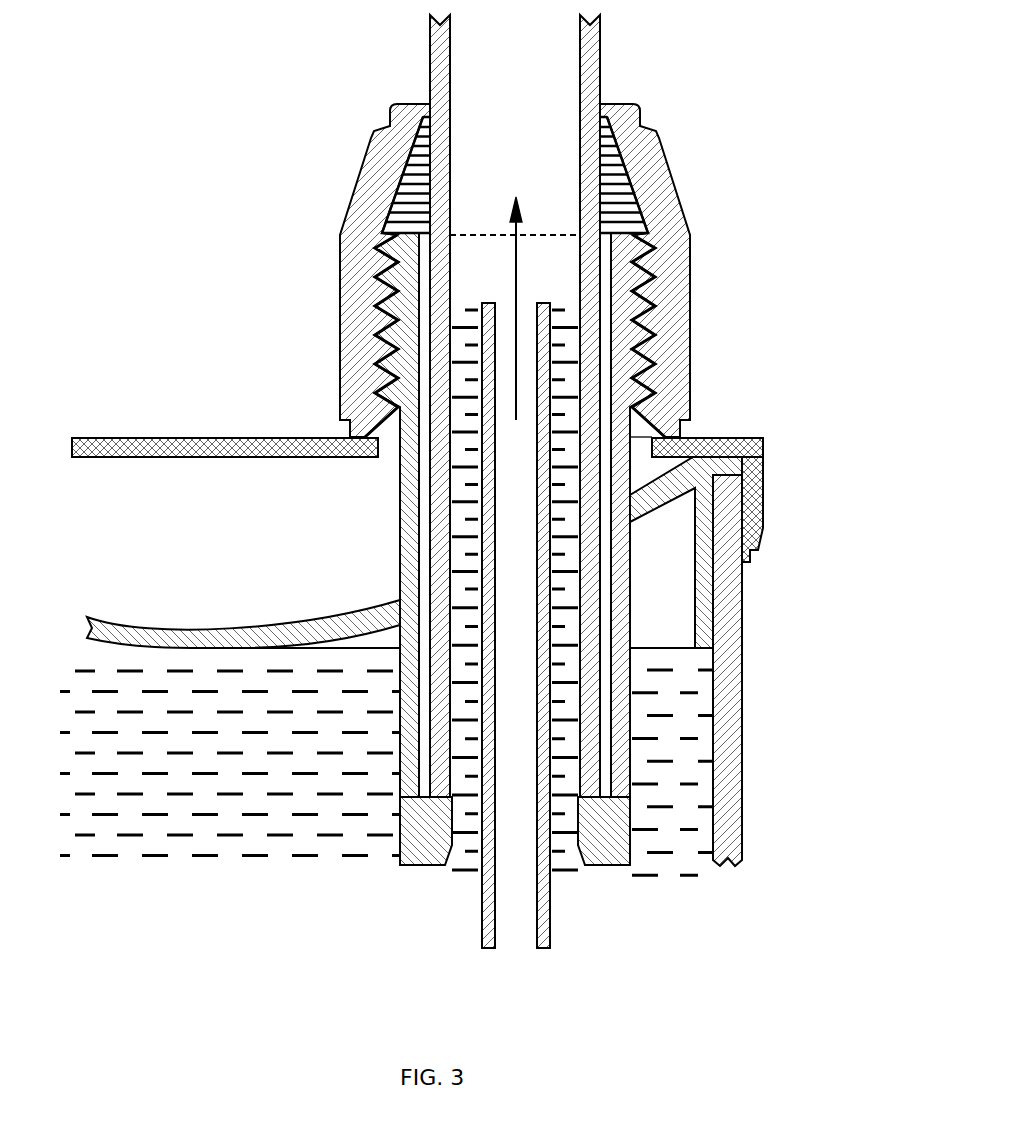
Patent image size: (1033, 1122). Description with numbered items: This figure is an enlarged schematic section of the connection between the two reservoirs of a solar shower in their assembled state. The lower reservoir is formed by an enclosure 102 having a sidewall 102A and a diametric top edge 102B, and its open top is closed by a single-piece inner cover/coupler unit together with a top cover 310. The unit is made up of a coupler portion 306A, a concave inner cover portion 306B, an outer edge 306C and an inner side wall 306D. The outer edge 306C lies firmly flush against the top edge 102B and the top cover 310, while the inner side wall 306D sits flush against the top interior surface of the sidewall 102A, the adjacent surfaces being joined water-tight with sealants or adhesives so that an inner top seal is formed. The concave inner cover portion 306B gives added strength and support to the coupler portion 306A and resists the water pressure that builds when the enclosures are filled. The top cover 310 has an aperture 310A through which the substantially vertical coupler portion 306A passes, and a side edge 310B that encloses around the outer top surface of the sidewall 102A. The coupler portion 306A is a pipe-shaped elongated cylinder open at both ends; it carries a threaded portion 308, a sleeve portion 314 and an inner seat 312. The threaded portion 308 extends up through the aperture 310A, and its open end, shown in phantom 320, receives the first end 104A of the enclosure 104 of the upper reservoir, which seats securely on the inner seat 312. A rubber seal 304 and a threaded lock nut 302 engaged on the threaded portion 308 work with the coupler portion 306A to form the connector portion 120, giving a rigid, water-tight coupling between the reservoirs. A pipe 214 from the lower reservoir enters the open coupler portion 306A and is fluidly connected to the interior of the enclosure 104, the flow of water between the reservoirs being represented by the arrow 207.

The enclosure 102 is at (742, 822).
The sidewall 102A is at (727, 775).
The top edge 102B is at (727, 500).
The enclosure 104 is at (600, 30).
The first end 104A is at (590, 737).
The connector portion 120 is at (777, 144).
The arrow 207 is at (515, 252).
The pipe 214 is at (553, 918).
The lock nut 302 is at (682, 202).
The rubber seal 304 is at (618, 148).
The coupler portion 306A is at (388, 665).
The inner cover portion 306B is at (185, 627).
The outer edge 306C is at (725, 468).
The inner side wall 306D is at (705, 633).
The threaded portion 308 is at (403, 325).
The top cover 310 is at (203, 437).
The aperture 310A is at (641, 448).
The side edge 310B is at (750, 548).
The inner seat 312 is at (432, 827).
The sleeve portion 314 is at (408, 763).
The phantom 320 is at (547, 233).